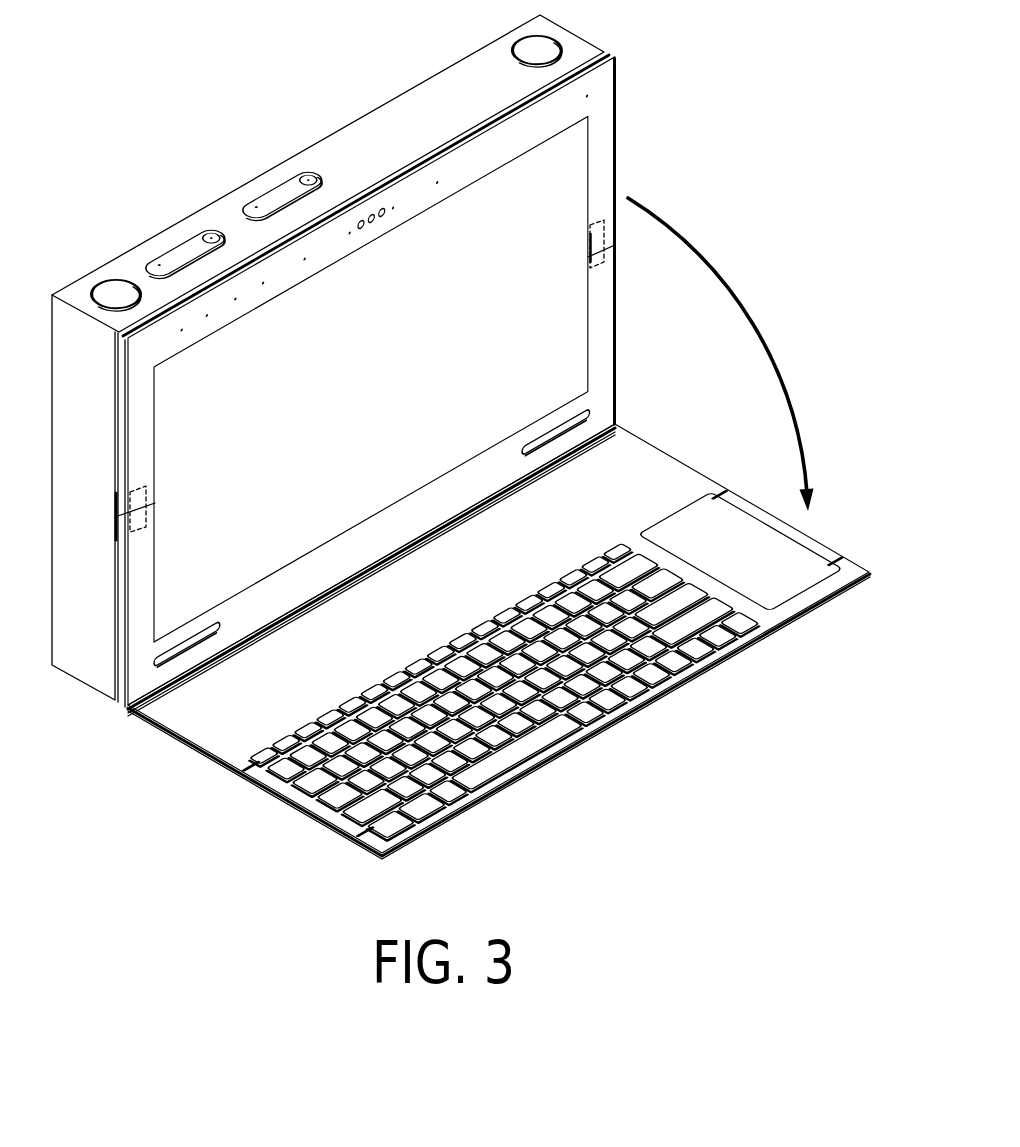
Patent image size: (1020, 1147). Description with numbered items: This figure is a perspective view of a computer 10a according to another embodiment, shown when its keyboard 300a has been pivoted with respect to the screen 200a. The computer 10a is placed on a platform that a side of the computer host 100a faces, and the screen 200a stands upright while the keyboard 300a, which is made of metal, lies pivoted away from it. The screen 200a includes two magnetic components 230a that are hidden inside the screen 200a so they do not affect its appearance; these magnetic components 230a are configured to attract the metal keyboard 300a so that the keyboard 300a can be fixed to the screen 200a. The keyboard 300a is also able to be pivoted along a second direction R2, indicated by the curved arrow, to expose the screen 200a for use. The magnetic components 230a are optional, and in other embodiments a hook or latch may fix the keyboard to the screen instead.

The computer 10a is at (75, 57).
The computer host 100a is at (60, 242).
The screen 200a is at (602, 141).
The magnetic components 230a is at (612, 253).
The keyboard 300a is at (817, 594).
The second direction R2 is at (721, 354).